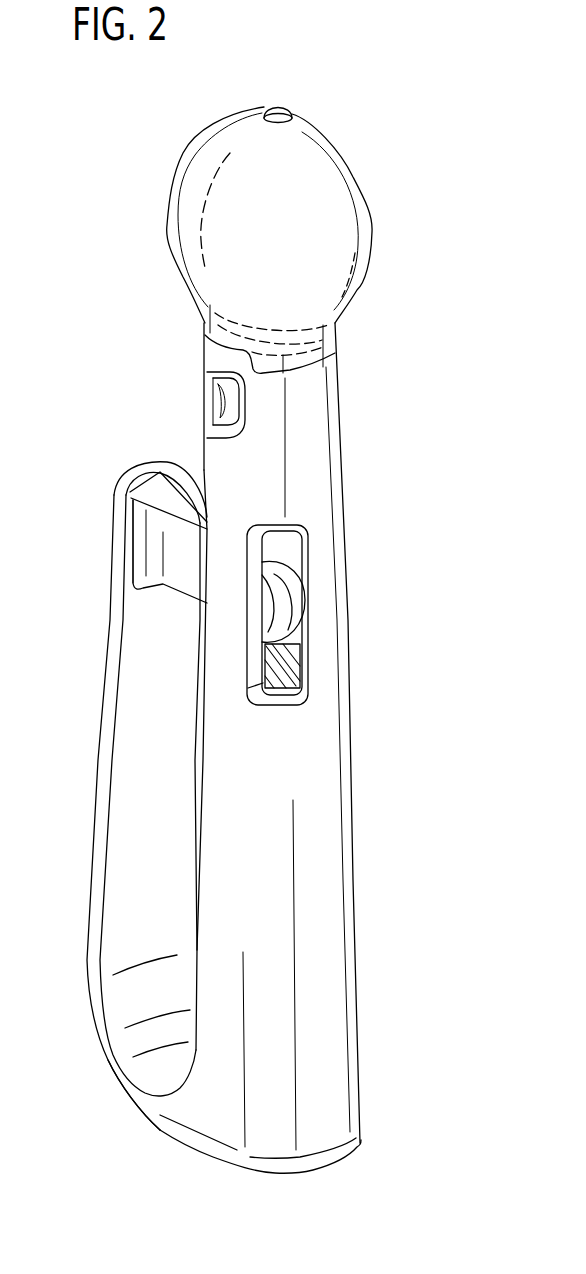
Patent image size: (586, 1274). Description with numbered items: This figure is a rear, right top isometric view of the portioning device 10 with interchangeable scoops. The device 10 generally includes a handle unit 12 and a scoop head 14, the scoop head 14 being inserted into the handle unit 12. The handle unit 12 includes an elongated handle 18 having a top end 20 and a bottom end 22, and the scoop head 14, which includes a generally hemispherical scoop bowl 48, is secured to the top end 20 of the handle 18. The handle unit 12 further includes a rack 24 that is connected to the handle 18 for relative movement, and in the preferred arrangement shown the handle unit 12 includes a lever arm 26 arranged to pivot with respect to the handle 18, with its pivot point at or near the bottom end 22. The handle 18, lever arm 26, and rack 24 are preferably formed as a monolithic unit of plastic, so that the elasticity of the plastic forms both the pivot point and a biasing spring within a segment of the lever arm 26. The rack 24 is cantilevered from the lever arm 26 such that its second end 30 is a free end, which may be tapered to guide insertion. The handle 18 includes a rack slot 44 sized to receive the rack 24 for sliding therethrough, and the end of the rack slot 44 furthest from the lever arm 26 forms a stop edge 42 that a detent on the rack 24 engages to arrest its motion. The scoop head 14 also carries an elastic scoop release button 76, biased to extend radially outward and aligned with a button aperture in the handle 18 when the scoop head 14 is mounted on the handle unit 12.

The portioning device 10 is at (299, 51).
The handle unit 12 is at (101, 1094).
The scoop head 14 is at (331, 138).
The elongated handle 18 is at (230, 757).
The top end 20 is at (333, 365).
The bottom end 22 is at (360, 1118).
The rack 24 is at (182, 548).
The lever arm 26 is at (130, 812).
The second end 30 is at (285, 607).
The stop edge 42 is at (260, 660).
The rack slot 44 is at (277, 678).
The scoop bowl 48 is at (233, 185).
The scoop release button 76 is at (217, 400).